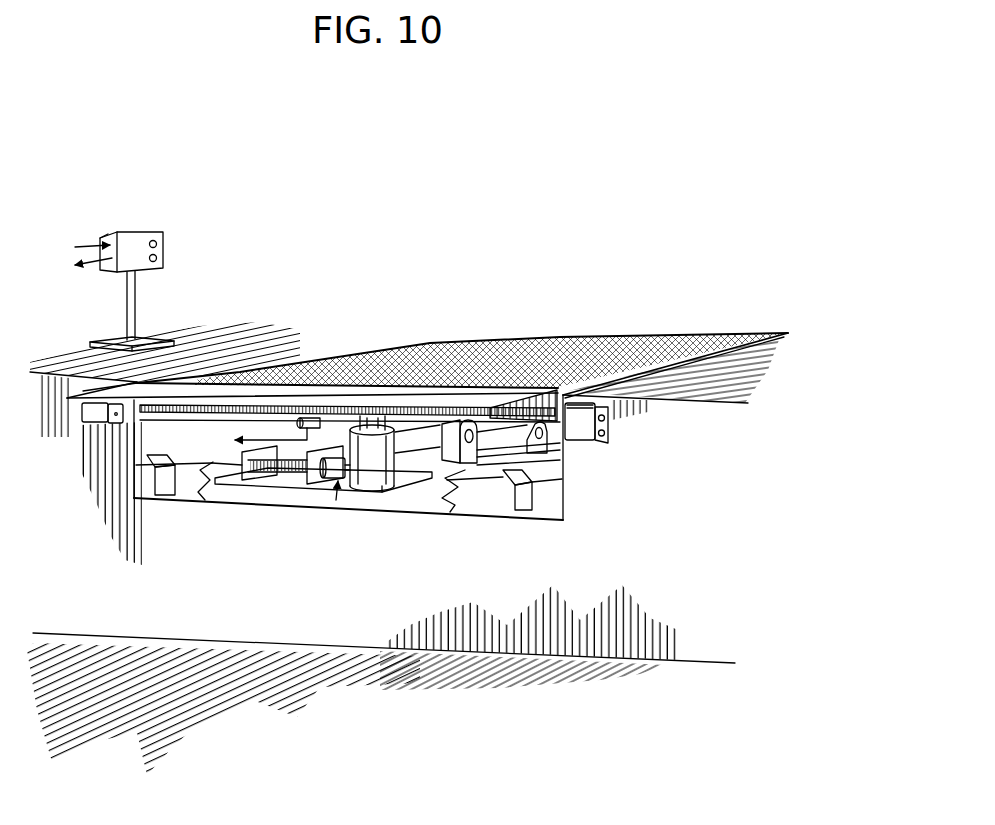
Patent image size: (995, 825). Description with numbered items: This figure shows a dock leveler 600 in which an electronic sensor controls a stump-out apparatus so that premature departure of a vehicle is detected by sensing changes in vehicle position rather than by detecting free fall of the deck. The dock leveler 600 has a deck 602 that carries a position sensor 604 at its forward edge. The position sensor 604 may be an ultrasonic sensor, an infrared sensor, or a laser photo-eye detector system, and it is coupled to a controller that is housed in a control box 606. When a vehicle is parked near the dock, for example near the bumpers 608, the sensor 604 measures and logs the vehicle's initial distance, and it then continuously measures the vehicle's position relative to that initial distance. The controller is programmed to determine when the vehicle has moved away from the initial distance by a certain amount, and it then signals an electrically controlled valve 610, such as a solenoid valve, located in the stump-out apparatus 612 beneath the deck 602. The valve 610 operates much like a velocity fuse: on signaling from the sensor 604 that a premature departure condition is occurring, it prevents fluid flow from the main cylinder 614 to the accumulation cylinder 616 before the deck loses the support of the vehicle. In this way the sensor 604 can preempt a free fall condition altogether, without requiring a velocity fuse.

The dock leveler 600 is at (465, 225).
The deck 602 is at (533, 362).
The position sensor 604 is at (313, 405).
The control box 606 is at (128, 230).
The bumpers 608 is at (82, 410).
The electrically controlled valve 610 is at (337, 457).
The stump-out apparatus 612 is at (390, 505).
The main cylinder 614 is at (375, 468).
The accumulation cylinder 616 is at (294, 482).